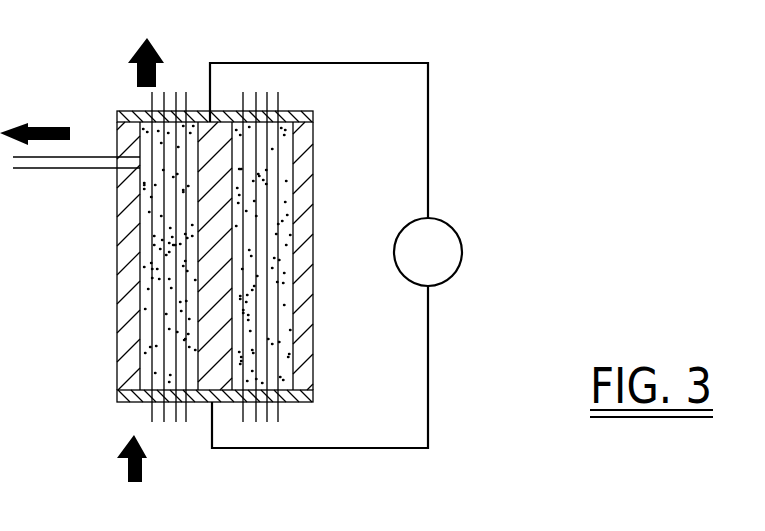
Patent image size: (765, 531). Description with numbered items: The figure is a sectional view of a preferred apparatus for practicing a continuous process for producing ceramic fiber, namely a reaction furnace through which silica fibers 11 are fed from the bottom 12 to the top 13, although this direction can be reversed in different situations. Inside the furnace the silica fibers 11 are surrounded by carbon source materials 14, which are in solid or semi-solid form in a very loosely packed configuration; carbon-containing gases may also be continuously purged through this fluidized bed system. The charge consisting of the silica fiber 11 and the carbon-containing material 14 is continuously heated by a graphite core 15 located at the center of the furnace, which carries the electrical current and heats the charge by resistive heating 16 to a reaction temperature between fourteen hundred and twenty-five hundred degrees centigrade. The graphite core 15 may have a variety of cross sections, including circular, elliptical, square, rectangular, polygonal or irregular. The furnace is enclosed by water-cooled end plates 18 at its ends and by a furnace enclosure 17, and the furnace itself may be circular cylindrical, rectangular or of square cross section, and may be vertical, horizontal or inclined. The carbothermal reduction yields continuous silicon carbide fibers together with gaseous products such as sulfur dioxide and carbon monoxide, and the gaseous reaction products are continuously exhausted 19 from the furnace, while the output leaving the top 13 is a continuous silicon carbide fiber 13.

The silica fibers 11 is at (142, 248).
The bottom 12 is at (125, 468).
The top 13 is at (135, 73).
The carbon source materials 14 is at (170, 290).
The graphite core 15 is at (203, 190).
The resistive heating 16 is at (460, 238).
The furnace enclosure 17 is at (300, 218).
The water-cooled end plates 18 is at (118, 398).
The exhaust 19 is at (47, 122).